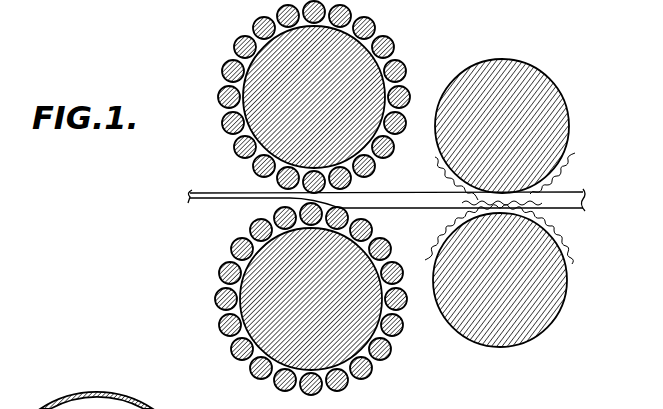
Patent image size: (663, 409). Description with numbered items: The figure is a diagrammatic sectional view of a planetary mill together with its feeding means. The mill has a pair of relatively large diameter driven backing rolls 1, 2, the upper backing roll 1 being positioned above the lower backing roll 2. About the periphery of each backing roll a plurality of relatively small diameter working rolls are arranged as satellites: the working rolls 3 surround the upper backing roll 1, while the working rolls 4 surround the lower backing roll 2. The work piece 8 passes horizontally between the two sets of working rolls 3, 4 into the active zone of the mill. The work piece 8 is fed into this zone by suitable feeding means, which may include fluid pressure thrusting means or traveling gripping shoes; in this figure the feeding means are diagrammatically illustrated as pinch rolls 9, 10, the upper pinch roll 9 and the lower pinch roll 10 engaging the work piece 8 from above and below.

The backing roll 1 is at (314, 97).
The backing roll 2 is at (311, 299).
The working rolls 3 is at (400, 64).
The working rolls 4 is at (401, 327).
The work piece 8 is at (383, 193).
The pinch roll 9 is at (562, 95).
The pinch roll 10 is at (558, 305).